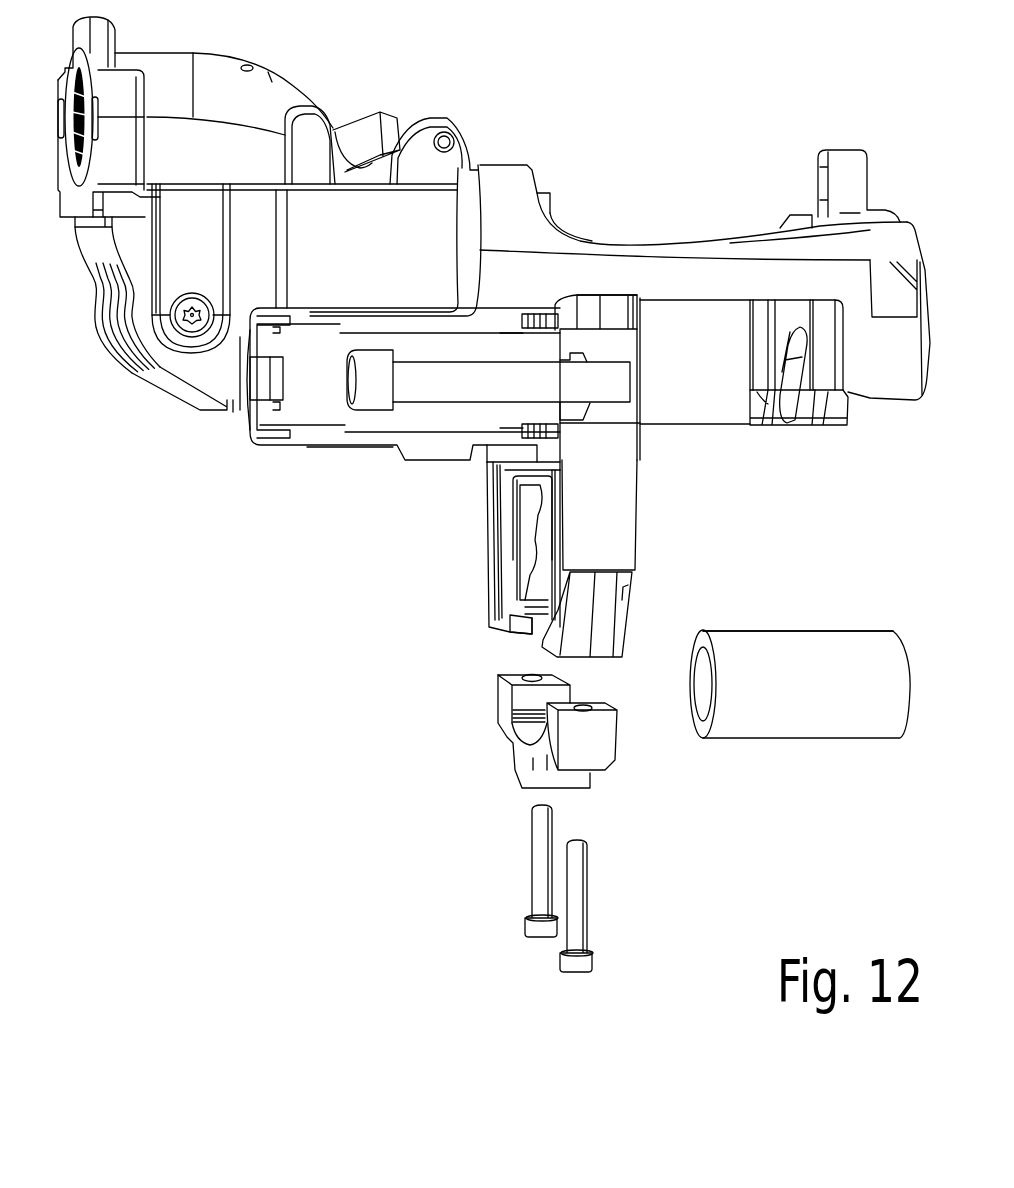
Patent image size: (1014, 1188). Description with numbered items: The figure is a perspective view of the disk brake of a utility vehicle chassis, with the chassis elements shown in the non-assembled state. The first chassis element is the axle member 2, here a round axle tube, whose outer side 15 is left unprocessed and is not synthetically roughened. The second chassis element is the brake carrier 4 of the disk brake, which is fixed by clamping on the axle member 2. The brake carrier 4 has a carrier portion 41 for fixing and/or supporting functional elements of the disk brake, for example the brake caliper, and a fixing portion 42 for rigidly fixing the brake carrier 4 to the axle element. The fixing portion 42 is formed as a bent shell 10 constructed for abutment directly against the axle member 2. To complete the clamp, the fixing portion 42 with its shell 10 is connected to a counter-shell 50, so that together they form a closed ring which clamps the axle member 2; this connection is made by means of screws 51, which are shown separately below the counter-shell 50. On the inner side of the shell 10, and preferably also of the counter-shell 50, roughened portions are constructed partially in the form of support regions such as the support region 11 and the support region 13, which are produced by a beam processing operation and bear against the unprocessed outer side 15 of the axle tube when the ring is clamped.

The axle member 2 is at (800, 653).
The brake carrier 4 is at (640, 519).
The shell 10 is at (530, 623).
The support region 11 is at (528, 626).
The support region 13 is at (532, 723).
The outer side 15 is at (752, 635).
The carrier portion 41 is at (621, 352).
The fixing portion 42 is at (628, 633).
The counter-shell 50 is at (505, 708).
The screws 51 is at (537, 882).